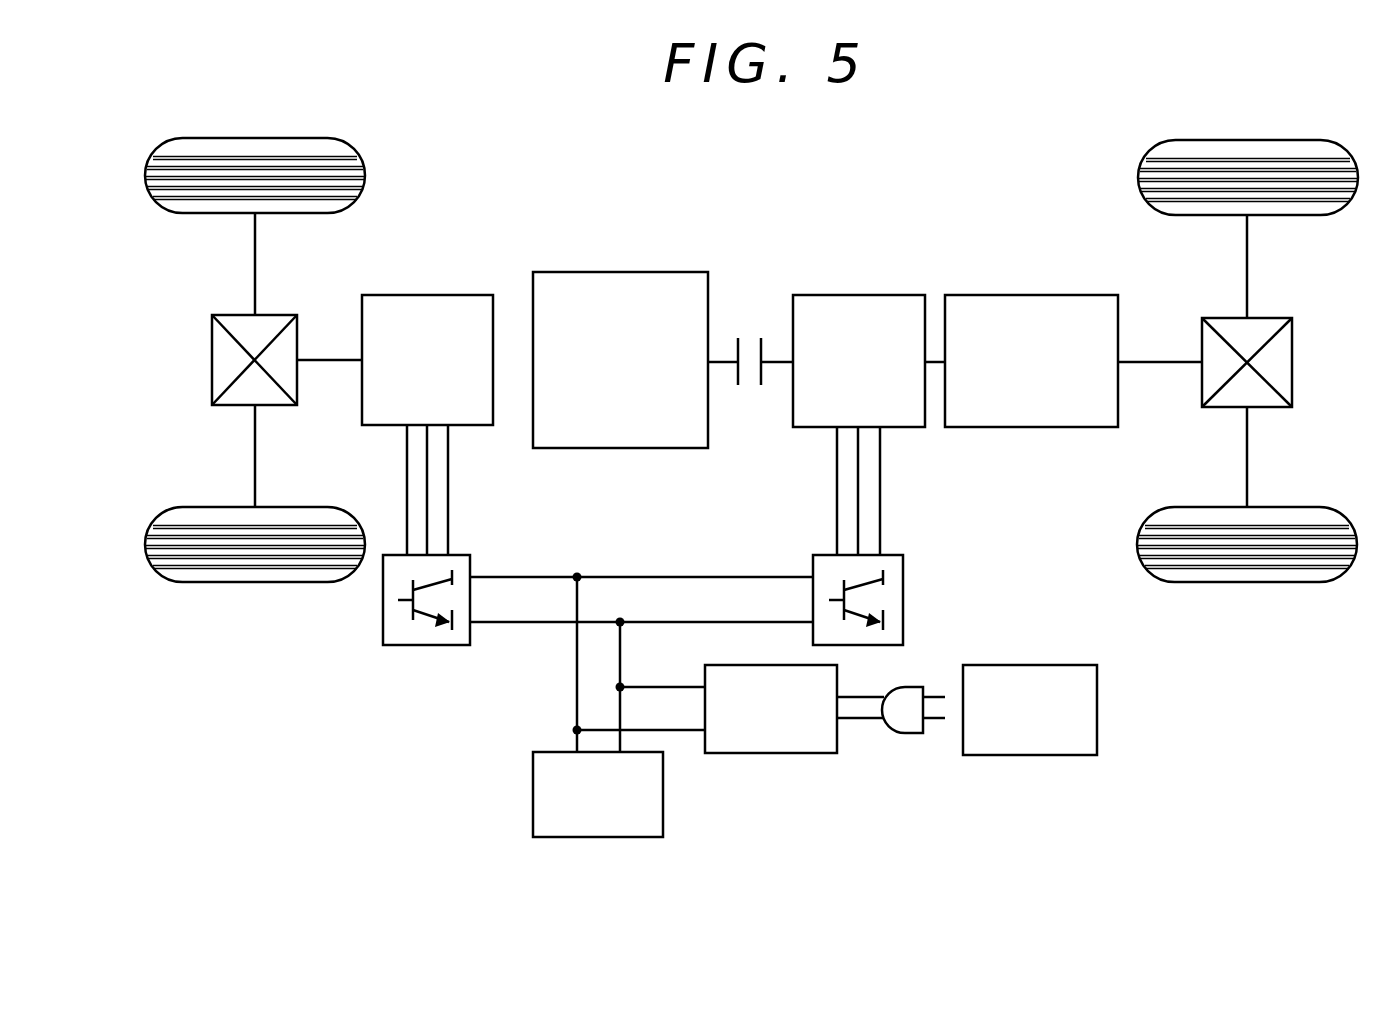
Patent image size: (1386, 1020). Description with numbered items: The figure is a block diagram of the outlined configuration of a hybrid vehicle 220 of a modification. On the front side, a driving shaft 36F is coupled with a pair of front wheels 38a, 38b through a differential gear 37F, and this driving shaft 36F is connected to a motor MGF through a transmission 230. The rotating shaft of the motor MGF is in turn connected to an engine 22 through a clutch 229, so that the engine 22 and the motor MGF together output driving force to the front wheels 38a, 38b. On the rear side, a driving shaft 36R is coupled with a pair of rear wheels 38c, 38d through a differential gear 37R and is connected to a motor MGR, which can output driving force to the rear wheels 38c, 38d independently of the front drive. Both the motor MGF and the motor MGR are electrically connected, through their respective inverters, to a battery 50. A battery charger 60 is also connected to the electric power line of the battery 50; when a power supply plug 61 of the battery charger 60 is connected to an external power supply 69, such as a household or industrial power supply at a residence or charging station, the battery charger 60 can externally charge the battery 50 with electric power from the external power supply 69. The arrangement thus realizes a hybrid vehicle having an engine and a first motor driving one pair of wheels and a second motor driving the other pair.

The hybrid vehicle 220 is at (1044, 118).
The engine 22 is at (622, 272).
The clutch 229 is at (748, 337).
The transmission 230 is at (1032, 295).
The motor MGR is at (427, 295).
The motor MGF is at (860, 295).
The driving shaft 36R is at (327, 357).
The driving shaft 36F is at (1141, 360).
The differential gear 37R is at (233, 314).
The differential gear 37F is at (1276, 318).
The front wheel 38a is at (1247, 139).
The front wheel 38b is at (1245, 582).
The rear wheel 38c is at (252, 137).
The rear wheel 38d is at (250, 582).
The battery 50 is at (533, 797).
The battery charger 60 is at (772, 755).
The power supply plug 61 is at (901, 735).
The external power supply 69 is at (1031, 756).